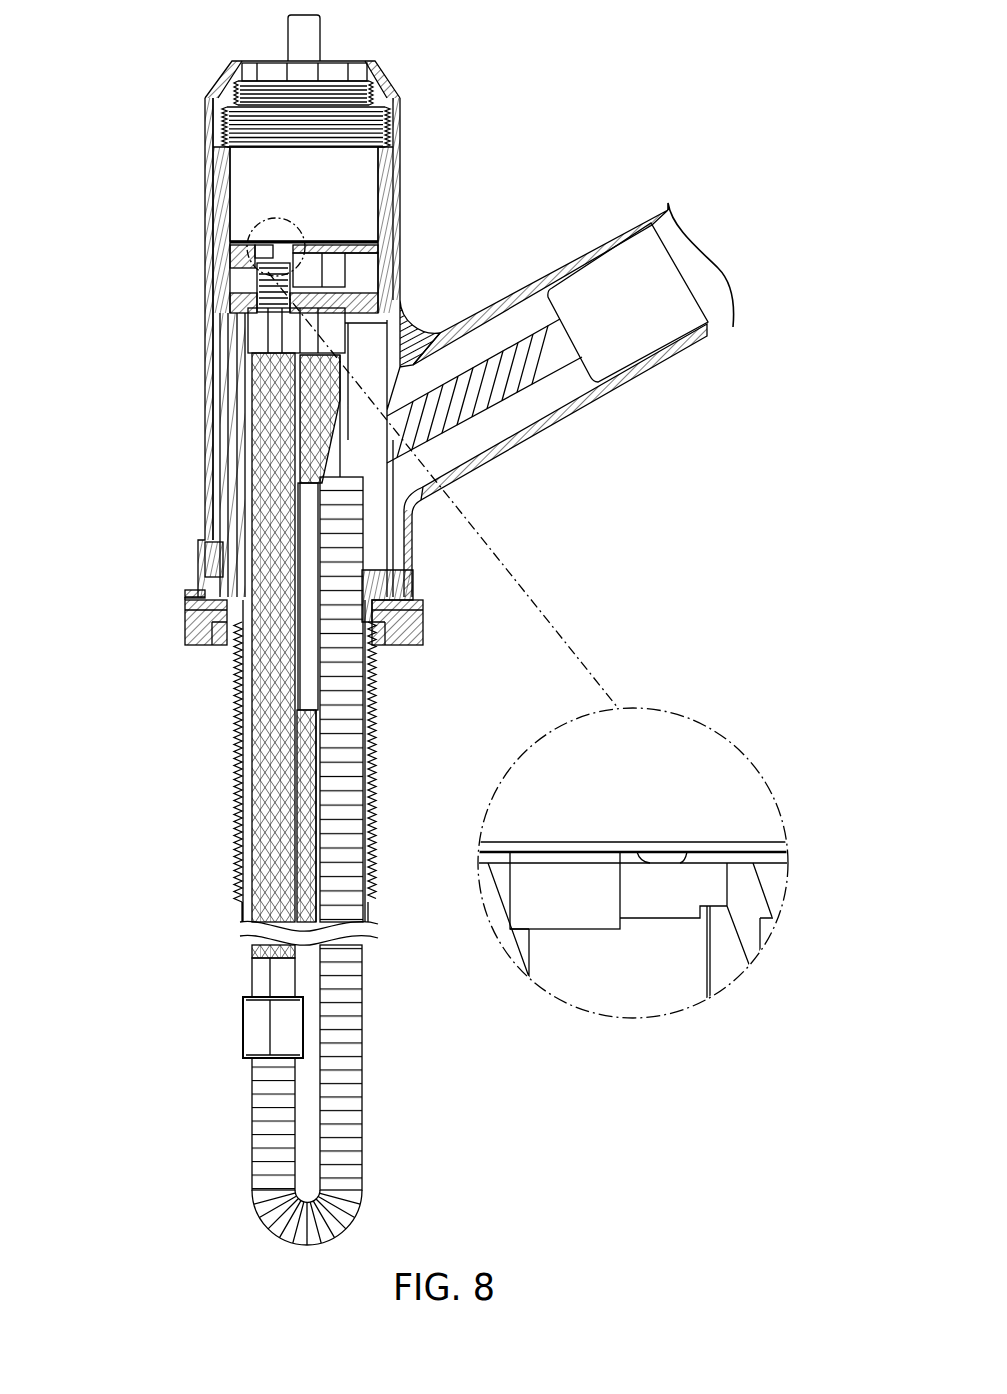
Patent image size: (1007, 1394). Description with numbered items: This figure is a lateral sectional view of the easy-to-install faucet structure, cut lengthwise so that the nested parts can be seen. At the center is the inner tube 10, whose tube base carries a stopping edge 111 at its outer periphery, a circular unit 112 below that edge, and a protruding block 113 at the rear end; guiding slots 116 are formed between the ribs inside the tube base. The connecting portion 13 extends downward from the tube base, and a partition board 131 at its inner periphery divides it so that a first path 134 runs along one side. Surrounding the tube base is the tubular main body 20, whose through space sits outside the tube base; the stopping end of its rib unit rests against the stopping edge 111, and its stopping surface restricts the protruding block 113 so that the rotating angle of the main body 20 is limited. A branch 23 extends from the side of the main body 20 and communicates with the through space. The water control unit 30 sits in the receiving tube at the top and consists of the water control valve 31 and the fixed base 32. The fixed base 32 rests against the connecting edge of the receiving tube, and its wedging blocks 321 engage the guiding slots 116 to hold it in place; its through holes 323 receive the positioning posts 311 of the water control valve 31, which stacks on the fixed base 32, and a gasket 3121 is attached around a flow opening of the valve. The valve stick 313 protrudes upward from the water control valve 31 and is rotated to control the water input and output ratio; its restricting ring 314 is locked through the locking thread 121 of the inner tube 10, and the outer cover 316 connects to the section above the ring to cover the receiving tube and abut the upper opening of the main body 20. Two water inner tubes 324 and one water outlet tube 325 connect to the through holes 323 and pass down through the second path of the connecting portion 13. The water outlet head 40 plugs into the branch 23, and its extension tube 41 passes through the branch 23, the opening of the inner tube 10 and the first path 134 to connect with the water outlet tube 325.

The inner tube 10 is at (215, 503).
The connecting portion 13 is at (240, 707).
The main body 20 is at (207, 390).
The branch 23 is at (608, 246).
The water control unit 30 is at (215, 122).
The water control valve 31 is at (262, 186).
The fixed base 32 is at (232, 248).
The water outlet head 40 is at (637, 340).
The extension tube 41 is at (546, 367).
The stopping edge 111 is at (200, 601).
The circular unit 112 is at (423, 628).
The protruding block 113 is at (208, 555).
The guiding slots 116 is at (248, 320).
The locking thread 121 is at (385, 145).
The partition board 131 is at (310, 558).
The first path 134 is at (248, 768).
The positioning posts 311 is at (558, 872).
The valve stick 313 is at (305, 38).
The restricting ring 314 is at (388, 140).
The outer cover 316 is at (382, 118).
The wedging blocks 321 is at (174, 446).
The through holes 323 is at (263, 257).
The water inner tubes 324 is at (352, 305).
The water outlet tube 325 is at (272, 346).
The gasket 3121 is at (680, 858).